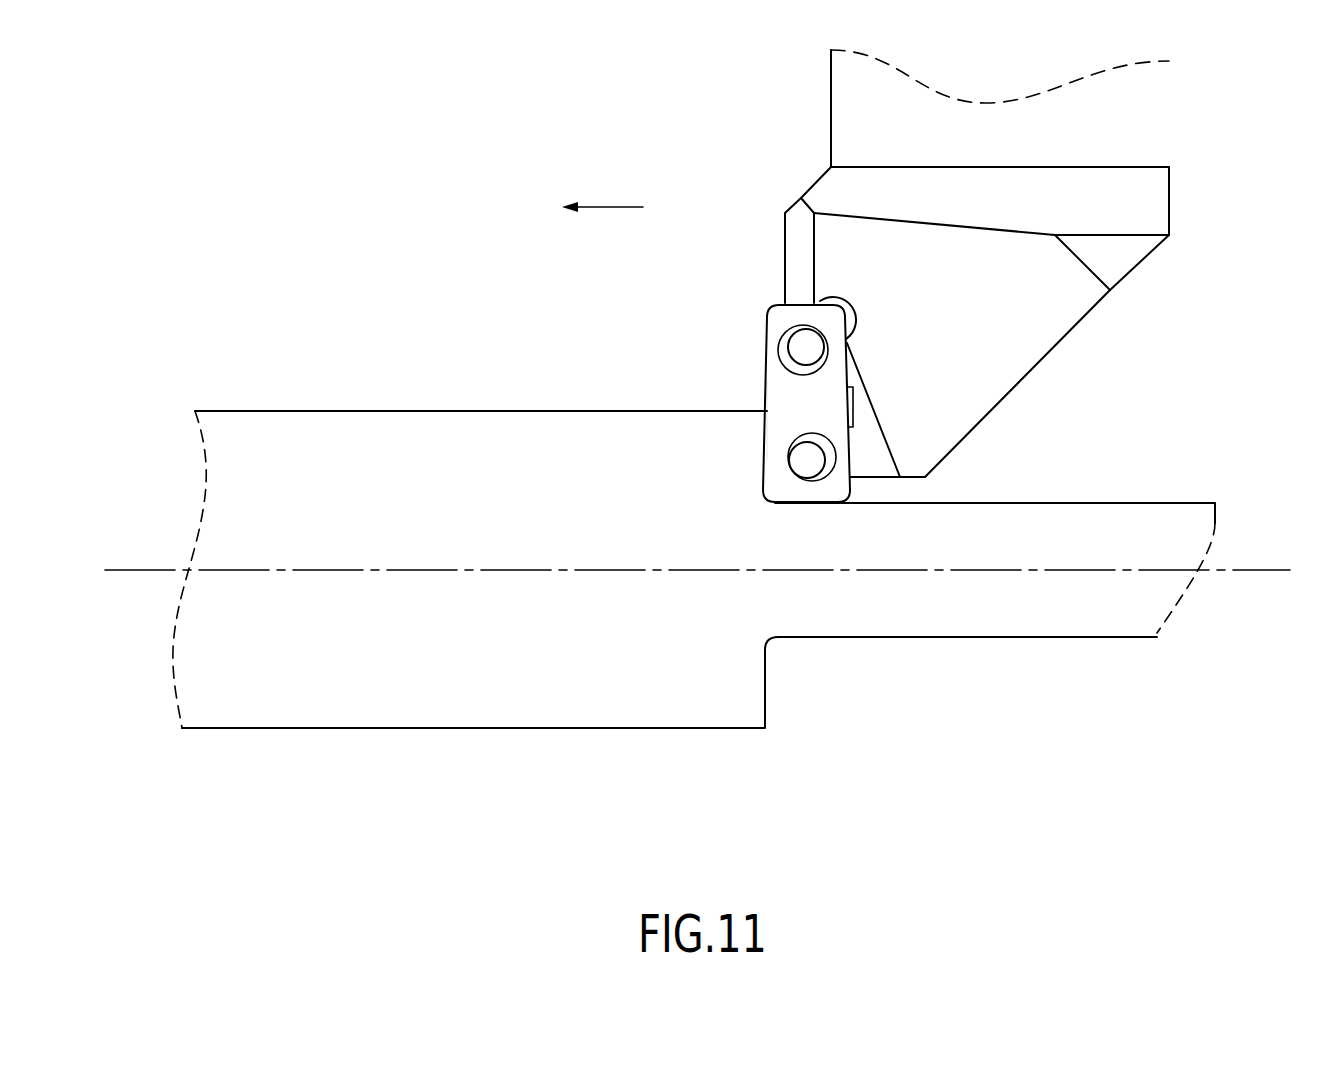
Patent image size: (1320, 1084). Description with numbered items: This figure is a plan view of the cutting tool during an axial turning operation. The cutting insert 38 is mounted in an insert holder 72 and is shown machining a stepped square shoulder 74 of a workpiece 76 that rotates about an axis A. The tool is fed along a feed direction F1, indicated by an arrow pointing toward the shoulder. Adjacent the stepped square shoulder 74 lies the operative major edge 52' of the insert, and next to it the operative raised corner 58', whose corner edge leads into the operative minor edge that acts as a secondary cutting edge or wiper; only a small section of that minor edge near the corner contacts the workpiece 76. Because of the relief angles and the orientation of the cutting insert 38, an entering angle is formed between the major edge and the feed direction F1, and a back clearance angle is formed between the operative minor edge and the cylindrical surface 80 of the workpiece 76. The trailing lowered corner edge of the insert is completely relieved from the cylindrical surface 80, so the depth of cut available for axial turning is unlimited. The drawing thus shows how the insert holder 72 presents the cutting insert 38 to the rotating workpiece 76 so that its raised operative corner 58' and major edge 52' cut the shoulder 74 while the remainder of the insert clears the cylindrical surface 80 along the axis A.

The cutting insert 38 is at (760, 336).
The operative major edge 52' is at (697, 409).
The operative raised corner 58' is at (803, 599).
The insert holder 72 is at (1042, 310).
The stepped square shoulder 74 is at (767, 432).
The workpiece 76 is at (441, 406).
The cylindrical surface 80 is at (983, 503).
The axis A is at (1242, 569).
The feed direction F1 is at (625, 207).